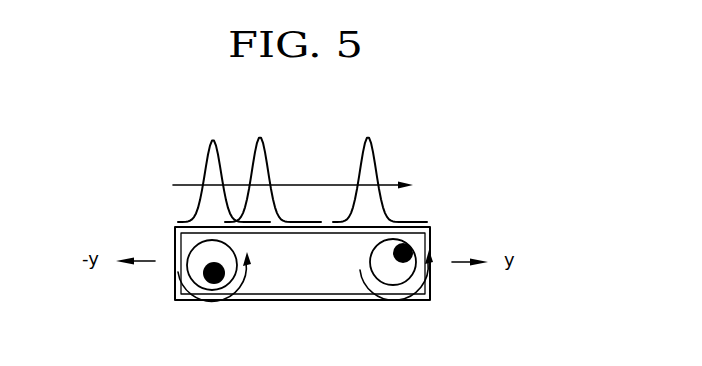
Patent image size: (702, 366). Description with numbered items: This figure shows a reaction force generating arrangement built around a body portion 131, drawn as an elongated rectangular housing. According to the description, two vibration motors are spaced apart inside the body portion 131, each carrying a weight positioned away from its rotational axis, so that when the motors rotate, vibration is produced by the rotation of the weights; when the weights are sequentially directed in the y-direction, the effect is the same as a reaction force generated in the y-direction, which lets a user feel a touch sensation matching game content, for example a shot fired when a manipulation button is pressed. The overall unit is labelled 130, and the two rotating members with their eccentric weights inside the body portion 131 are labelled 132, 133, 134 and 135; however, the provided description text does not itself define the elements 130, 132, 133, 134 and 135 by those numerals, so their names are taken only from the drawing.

The light emitting device 130 is at (452, 213).
The body portion 131 is at (302, 300).
The first rotating member 132 is at (196, 268).
The first mark 133 is at (216, 283).
The second rotating member 134 is at (388, 277).
The second mark 135 is at (408, 265).